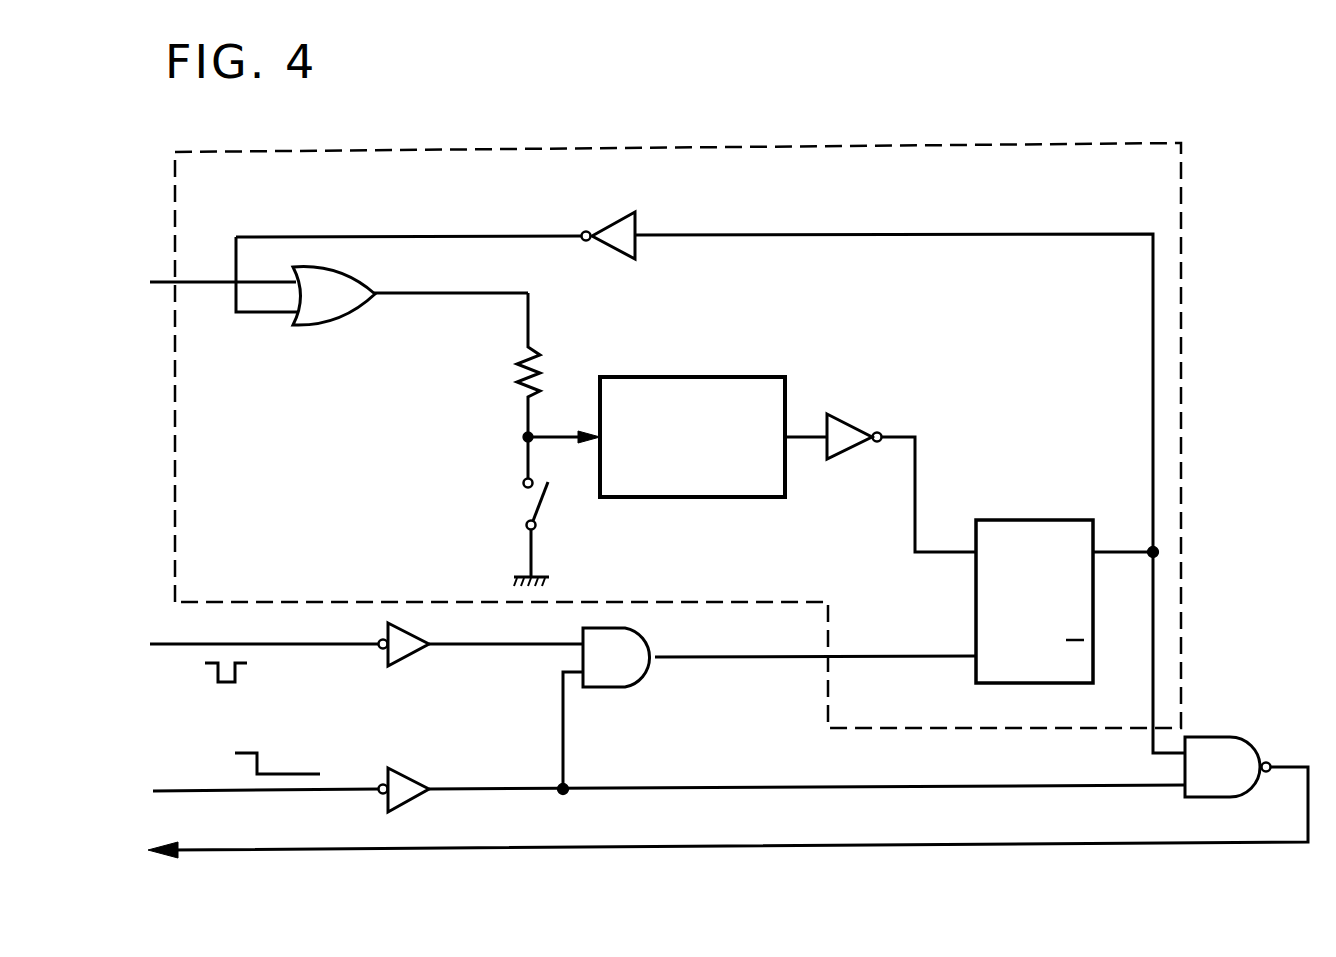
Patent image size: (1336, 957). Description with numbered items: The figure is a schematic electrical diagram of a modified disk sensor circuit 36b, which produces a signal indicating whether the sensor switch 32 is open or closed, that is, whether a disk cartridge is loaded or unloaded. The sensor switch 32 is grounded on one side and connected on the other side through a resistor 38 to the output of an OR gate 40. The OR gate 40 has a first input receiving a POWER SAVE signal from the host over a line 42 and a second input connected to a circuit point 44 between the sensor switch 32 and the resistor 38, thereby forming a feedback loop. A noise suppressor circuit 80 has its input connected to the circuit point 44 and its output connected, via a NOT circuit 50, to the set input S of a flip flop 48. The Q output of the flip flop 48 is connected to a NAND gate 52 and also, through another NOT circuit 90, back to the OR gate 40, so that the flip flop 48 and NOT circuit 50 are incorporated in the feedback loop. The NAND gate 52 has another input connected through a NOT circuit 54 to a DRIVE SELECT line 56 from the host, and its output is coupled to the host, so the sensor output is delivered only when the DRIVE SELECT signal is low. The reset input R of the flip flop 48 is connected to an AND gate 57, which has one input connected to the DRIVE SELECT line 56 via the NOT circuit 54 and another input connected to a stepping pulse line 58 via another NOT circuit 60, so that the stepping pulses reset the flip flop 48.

The modified disk sensor circuit 36b is at (796, 147).
The line 42 is at (159, 282).
The OR gate 40 is at (373, 284).
The NOT circuit 90 is at (615, 215).
The resistor 38 is at (516, 375).
The circuit point 44 is at (522, 437).
The sensor switch 32 is at (529, 500).
The noise suppressor circuit 80 is at (685, 377).
The NOT circuit 50 is at (853, 420).
The flip flop 48 is at (1022, 519).
The stepping pulse line 58 is at (177, 645).
The NOT circuit 60 is at (411, 658).
The AND gate 57 is at (656, 670).
The DRIVE SELECT line 56 is at (178, 786).
The NOT circuit 54 is at (413, 769).
The NAND gate 52 is at (1216, 736).